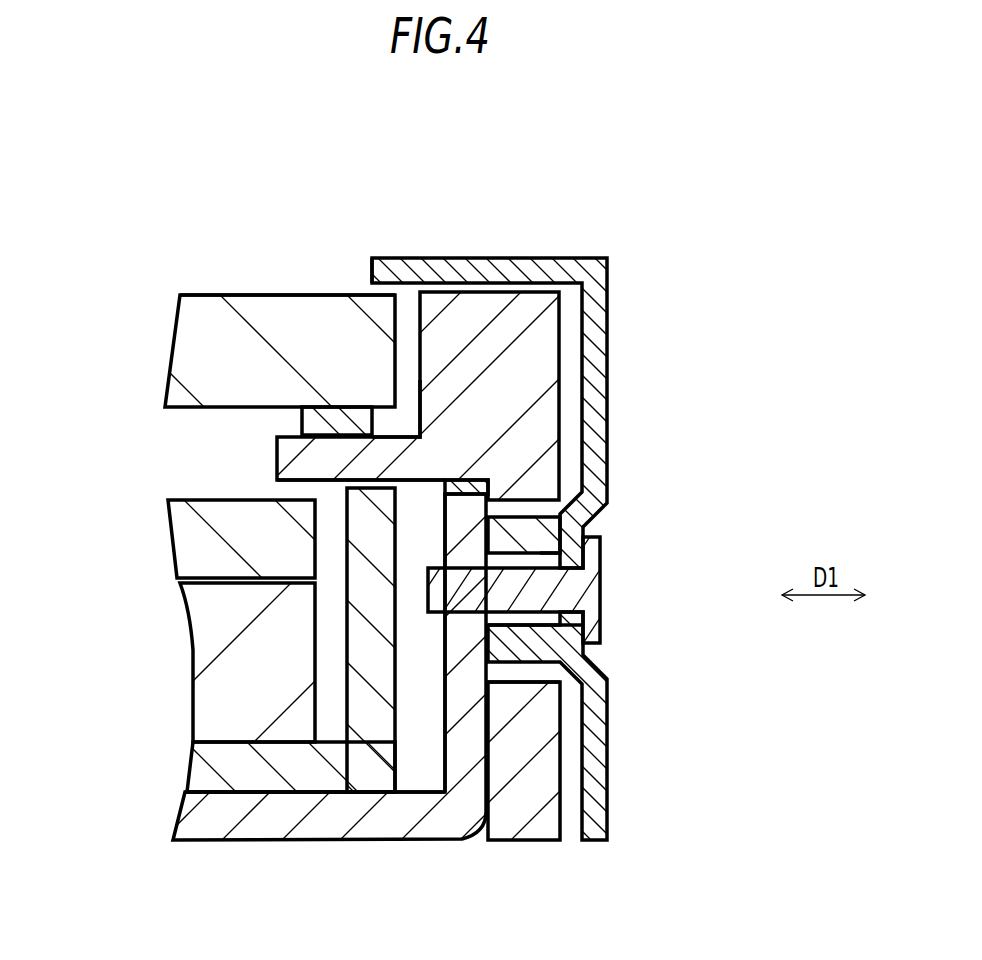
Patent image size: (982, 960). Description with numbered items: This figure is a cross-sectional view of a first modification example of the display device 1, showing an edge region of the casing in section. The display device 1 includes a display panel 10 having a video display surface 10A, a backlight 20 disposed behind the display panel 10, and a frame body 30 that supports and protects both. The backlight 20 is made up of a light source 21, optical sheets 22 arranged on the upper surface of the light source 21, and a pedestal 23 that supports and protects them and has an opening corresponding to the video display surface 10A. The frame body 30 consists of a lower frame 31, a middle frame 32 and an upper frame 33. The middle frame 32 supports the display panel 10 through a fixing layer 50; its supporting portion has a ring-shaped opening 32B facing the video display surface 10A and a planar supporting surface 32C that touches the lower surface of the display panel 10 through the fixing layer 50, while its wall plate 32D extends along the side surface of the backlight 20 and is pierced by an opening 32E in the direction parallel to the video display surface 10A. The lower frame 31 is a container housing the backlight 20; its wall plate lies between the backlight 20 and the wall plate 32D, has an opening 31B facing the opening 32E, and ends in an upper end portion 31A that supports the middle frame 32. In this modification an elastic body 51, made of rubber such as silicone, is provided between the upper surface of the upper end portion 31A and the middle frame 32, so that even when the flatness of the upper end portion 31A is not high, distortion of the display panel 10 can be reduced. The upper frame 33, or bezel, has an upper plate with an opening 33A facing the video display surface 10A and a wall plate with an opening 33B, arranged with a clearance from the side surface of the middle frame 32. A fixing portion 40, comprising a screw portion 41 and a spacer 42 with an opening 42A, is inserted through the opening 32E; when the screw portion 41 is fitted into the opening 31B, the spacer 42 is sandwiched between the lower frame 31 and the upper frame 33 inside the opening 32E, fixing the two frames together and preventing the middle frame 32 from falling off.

The display device 1 is at (714, 246).
The display panel 10 is at (274, 306).
The video display surface 10A is at (273, 293).
The backlight 20 is at (227, 650).
The light source 21 is at (205, 662).
The optical sheets 22 is at (186, 562).
The pedestal 23 is at (258, 770).
The frame body 30 is at (491, 581).
The lower frame 31 is at (431, 702).
The upper end portion 31A is at (468, 522).
The opening 31B is at (432, 815).
The middle frame 32 is at (391, 558).
The opening 32B is at (225, 446).
The supporting surface 32C is at (400, 437).
The wall plate 32D is at (528, 785).
The opening 32E is at (540, 683).
The upper frame 33 is at (491, 555).
The opening 33A is at (356, 268).
The opening 33B is at (568, 617).
The fixing portion 40 is at (552, 541).
The screw portion 41 is at (565, 594).
The spacer 42 is at (578, 491).
The opening 42A is at (528, 548).
The fixing layer 50 is at (335, 420).
The elastic body 51 is at (458, 480).